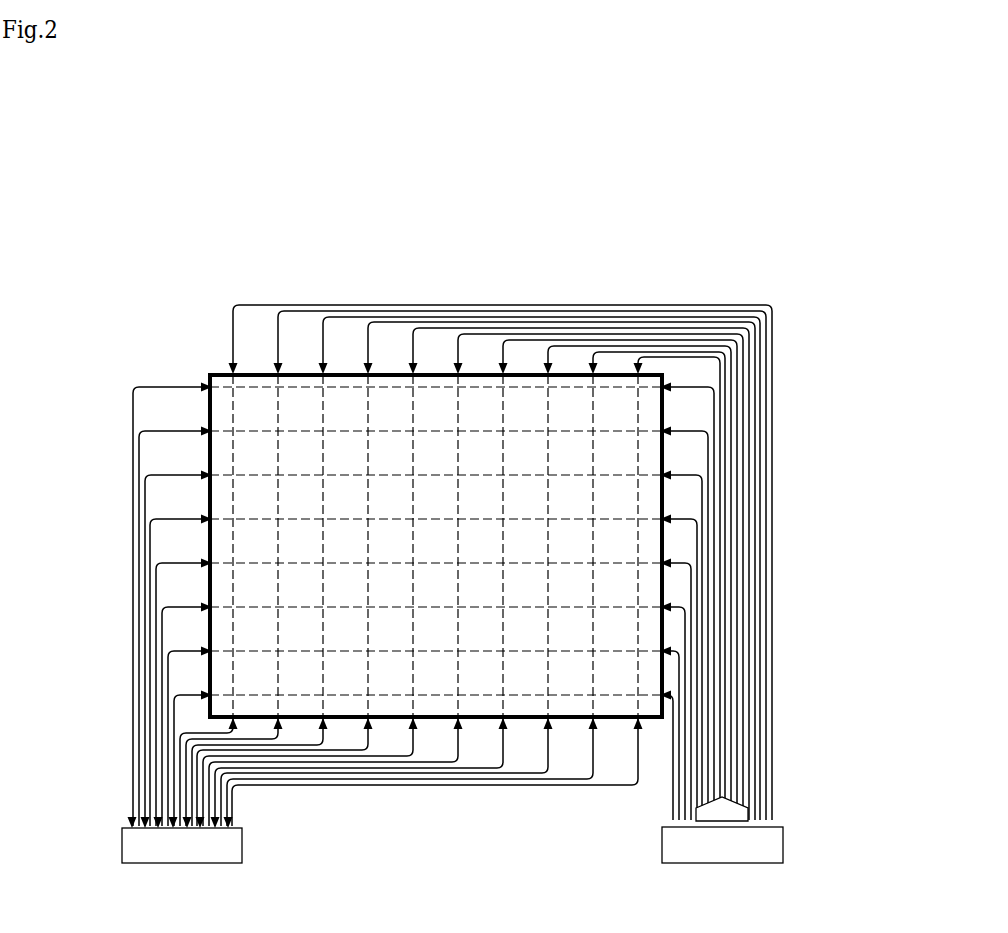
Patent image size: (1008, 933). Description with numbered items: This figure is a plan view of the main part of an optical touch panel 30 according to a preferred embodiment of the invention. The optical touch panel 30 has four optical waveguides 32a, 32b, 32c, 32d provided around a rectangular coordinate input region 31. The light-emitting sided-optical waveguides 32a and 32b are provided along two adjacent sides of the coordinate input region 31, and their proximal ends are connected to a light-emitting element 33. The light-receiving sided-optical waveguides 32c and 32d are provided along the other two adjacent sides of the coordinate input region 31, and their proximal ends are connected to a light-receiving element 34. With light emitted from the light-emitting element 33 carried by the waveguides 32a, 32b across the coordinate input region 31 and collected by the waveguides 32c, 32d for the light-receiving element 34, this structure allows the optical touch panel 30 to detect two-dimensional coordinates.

The optical touch panel 30 is at (460, 155).
The coordinate input region 31 is at (305, 455).
The light-emitting sided-optical waveguide 32a is at (738, 530).
The light-emitting sided-optical waveguide 32b is at (597, 330).
The light-receiving sided-optical waveguide 32c is at (145, 672).
The light-receiving sided-optical waveguide 32d is at (380, 772).
The light-emitting element 33 is at (703, 862).
The light-receiving element 34 is at (167, 862).